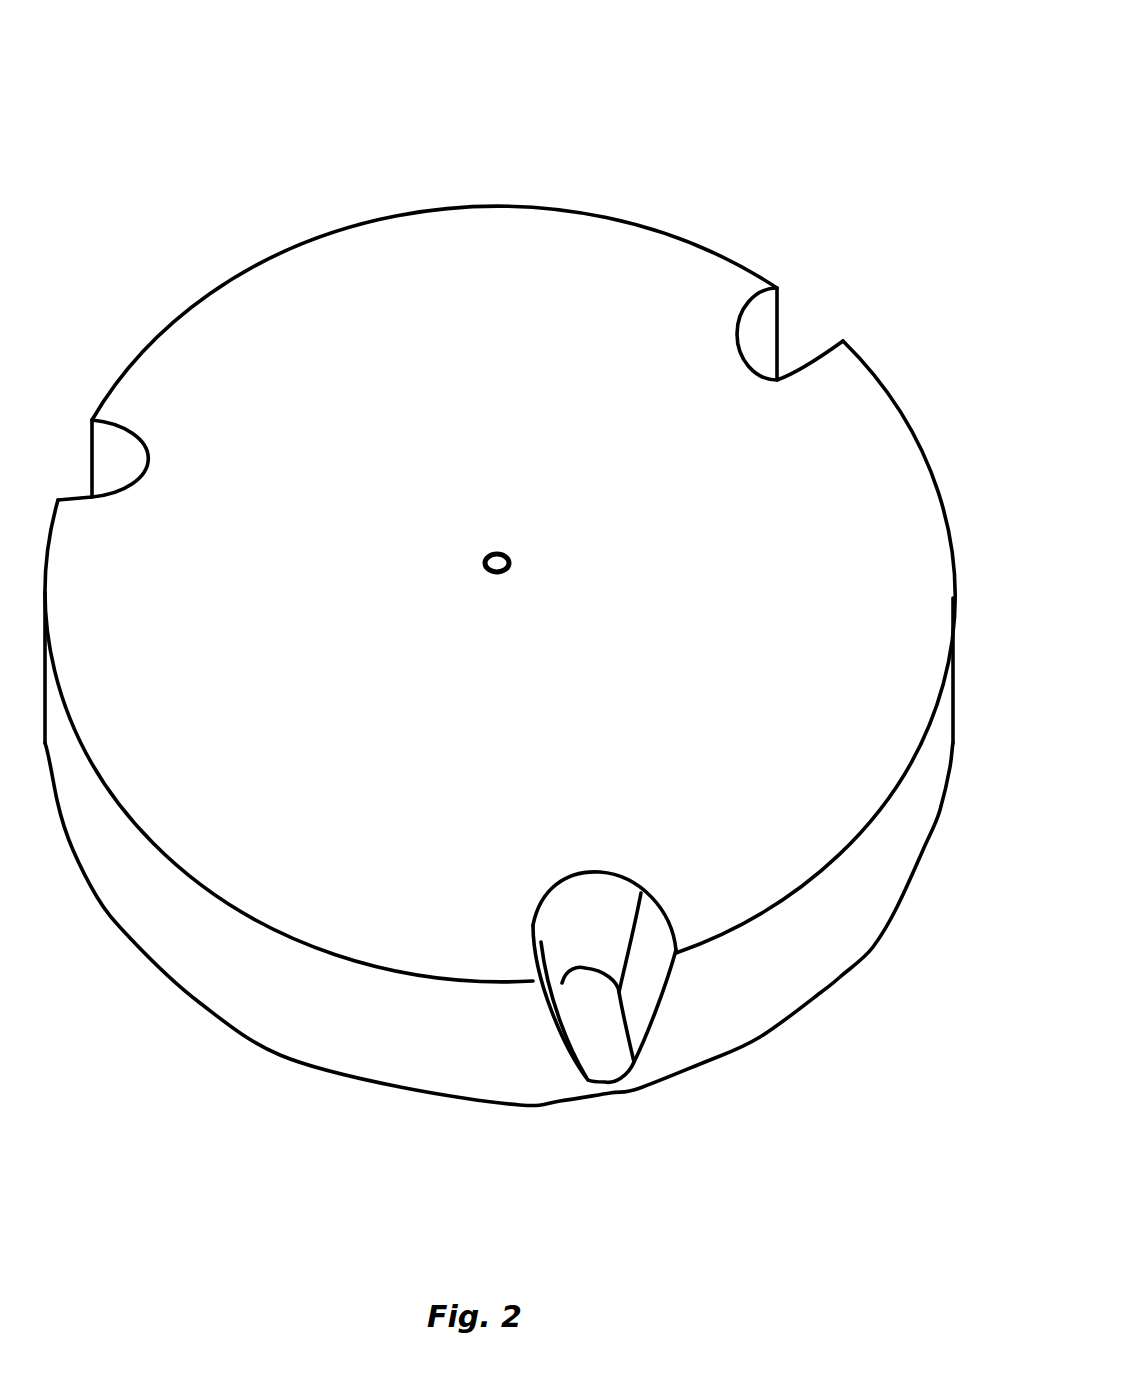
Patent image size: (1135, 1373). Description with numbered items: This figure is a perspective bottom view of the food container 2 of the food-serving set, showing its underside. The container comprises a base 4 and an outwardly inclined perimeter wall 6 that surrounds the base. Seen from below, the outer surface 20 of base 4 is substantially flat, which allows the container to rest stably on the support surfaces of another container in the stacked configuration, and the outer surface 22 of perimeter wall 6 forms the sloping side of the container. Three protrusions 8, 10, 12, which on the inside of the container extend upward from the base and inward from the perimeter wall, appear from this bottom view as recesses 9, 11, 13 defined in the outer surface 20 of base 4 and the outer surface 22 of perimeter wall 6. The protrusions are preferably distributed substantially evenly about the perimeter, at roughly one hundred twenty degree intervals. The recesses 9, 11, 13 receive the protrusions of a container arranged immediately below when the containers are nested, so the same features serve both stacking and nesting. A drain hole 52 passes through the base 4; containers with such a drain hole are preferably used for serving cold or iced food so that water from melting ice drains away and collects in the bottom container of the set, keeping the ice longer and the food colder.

The food container 2 is at (825, 43).
The base 4 is at (575, 402).
The perimeter wall 6 is at (768, 968).
The protrusion 8 is at (596, 1018).
The recess 9 is at (588, 994).
The protrusion 10 is at (793, 362).
The recess 11 is at (760, 352).
The protrusion 12 is at (63, 455).
The recess 13 is at (122, 457).
The outer surface of base 20 is at (298, 559).
The outer surface of perimeter wall 22 is at (365, 1031).
The drain hole 52 is at (490, 520).